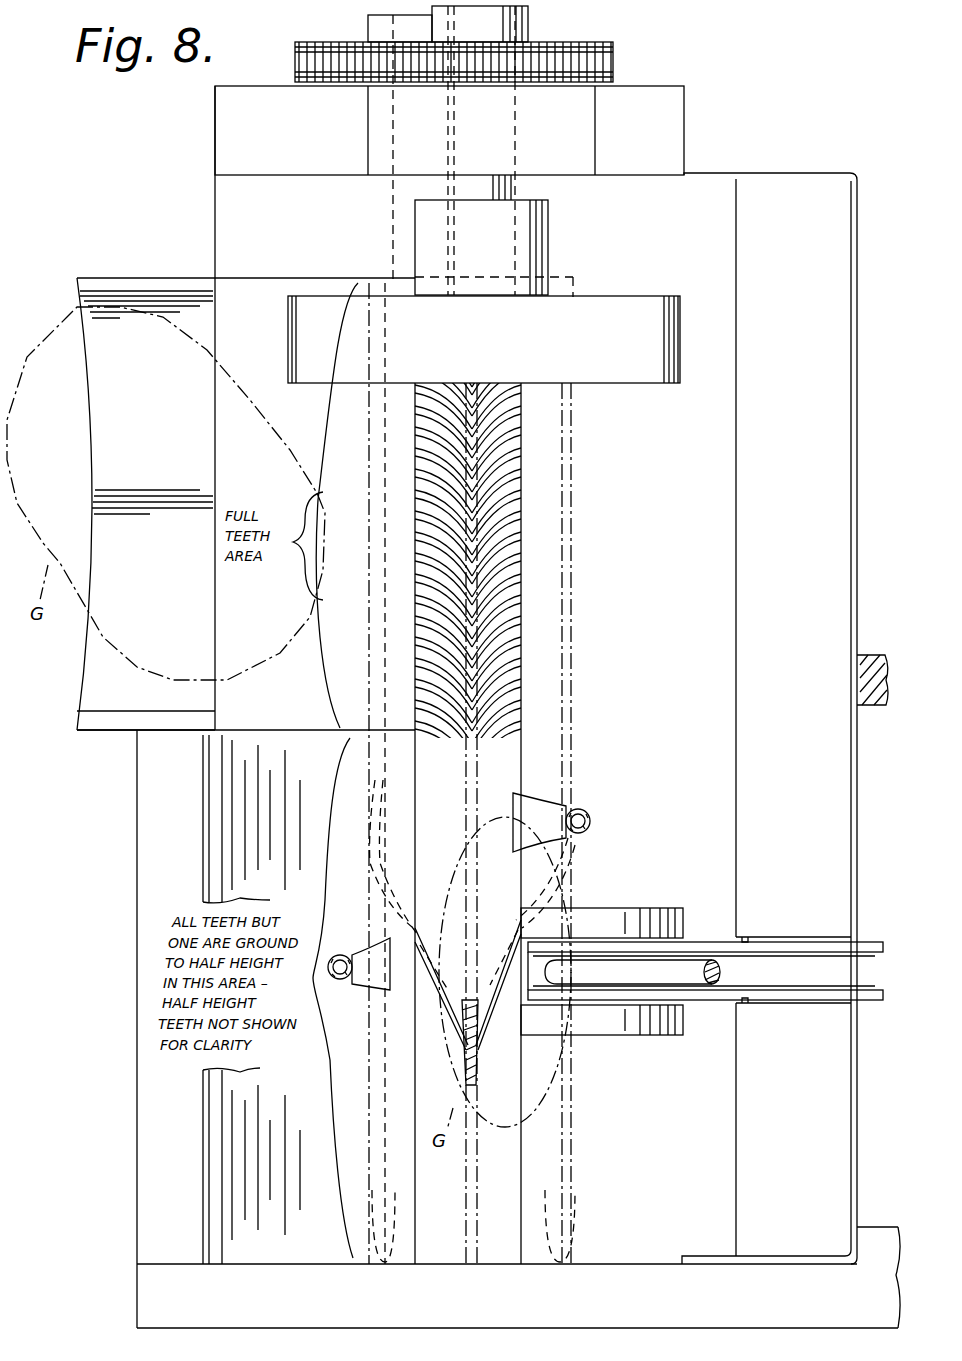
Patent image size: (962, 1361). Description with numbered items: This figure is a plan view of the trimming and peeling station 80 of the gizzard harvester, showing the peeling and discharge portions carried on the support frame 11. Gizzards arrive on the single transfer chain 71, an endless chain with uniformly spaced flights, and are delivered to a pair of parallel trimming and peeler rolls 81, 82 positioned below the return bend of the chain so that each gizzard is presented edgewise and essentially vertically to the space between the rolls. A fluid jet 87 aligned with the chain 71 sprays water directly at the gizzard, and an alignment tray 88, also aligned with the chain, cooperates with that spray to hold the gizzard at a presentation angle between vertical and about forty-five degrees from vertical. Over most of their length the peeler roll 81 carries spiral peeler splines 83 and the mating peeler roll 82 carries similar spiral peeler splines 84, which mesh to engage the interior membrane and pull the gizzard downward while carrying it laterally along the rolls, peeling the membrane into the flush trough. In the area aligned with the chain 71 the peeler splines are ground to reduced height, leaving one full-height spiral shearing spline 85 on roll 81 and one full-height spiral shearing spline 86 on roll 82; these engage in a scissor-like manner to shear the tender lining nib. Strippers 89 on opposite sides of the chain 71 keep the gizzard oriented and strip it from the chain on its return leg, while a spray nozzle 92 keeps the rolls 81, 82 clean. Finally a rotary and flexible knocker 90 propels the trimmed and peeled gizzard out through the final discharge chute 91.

The support frame 11 is at (874, 652).
The single transfer chain 71 is at (870, 942).
The trimming and peeling station 80 is at (113, 1054).
The peeler roll 81 is at (503, 1160).
The peeler roll 82 is at (430, 1165).
The spiral peeler splines 83 is at (508, 610).
The spiral peeler spline 84 is at (440, 630).
The spiral shearing spline 85 is at (500, 973).
The spiral shearing spline 86 is at (457, 987).
The fluid jet 87 is at (363, 975).
The alignment tray 88 is at (218, 1176).
The strippers 89 is at (633, 920).
The rotary and flexible knocker 90 is at (628, 378).
The final discharge chute 91 is at (128, 695).
The spray nozzle 92 is at (553, 815).